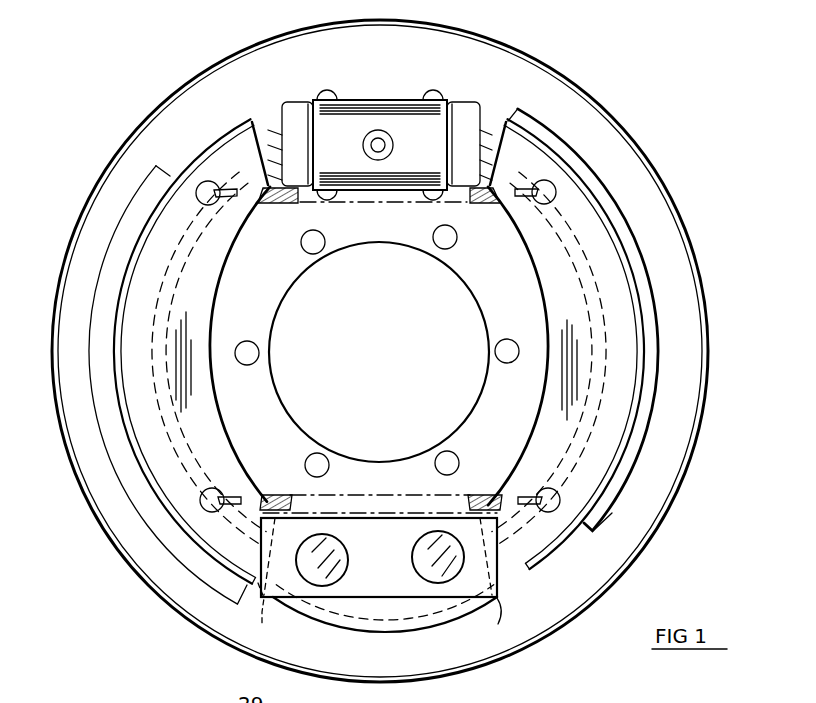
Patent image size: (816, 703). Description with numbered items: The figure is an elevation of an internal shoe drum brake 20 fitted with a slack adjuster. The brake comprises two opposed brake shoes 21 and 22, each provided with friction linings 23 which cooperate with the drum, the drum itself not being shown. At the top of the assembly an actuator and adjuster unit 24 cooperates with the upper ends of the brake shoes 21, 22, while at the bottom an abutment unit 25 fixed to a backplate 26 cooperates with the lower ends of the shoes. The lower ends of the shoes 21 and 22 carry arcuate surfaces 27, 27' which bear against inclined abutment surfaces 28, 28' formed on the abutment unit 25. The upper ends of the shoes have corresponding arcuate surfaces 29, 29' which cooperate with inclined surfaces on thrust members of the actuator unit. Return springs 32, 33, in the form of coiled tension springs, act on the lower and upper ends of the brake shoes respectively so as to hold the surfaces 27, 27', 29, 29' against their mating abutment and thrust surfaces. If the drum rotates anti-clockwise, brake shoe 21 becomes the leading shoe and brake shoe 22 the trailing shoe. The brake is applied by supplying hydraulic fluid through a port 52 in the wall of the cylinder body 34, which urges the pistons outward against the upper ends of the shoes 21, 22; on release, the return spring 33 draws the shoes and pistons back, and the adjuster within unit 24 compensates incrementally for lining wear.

The internal shoe drum brake 20 is at (704, 243).
The brake shoe 21 is at (170, 485).
The brake shoe 22 is at (620, 400).
The friction lining 23 is at (650, 327).
The actuator and adjuster unit 24 is at (497, 97).
The abutment unit 25 is at (407, 606).
The backplate 26 is at (552, 598).
The arcuate surface 27 is at (318, 530).
The arcuate surface 27' is at (486, 511).
The inclined abutment surface 28 is at (260, 616).
The inclined abutment surface 28' is at (507, 624).
The arcuate surface 29 is at (275, 132).
The arcuate surface 29' is at (488, 192).
The return spring 32 is at (300, 492).
The return spring 33 is at (332, 206).
The cylinder body 34 is at (345, 115).
The port 52 is at (388, 138).